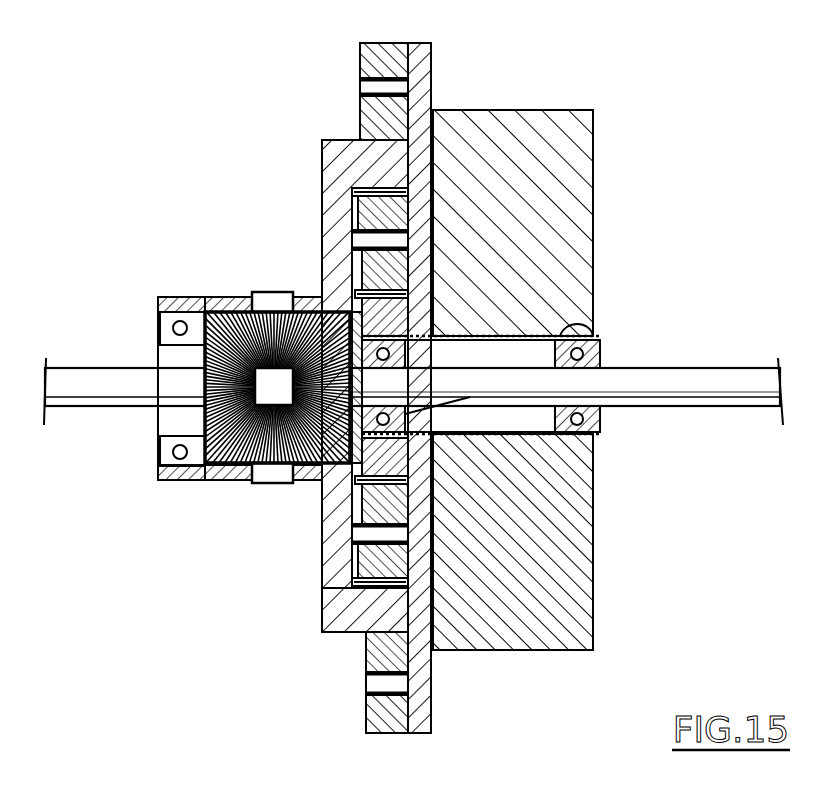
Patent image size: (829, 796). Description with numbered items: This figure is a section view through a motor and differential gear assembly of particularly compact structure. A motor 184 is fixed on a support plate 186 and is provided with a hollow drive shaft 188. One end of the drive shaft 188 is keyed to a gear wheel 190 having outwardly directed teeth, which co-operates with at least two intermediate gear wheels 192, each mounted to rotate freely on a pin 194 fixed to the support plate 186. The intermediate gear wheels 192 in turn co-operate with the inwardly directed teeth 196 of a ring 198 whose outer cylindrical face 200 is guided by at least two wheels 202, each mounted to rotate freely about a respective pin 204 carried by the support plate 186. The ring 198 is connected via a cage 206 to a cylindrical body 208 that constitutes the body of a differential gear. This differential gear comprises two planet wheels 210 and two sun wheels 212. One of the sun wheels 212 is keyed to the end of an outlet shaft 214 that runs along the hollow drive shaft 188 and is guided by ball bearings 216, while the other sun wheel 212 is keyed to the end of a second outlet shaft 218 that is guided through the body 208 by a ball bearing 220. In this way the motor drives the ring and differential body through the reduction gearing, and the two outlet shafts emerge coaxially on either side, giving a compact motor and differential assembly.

The motor 184 is at (578, 128).
The support plate 186 is at (432, 45).
The hollow drive shaft 188 is at (562, 340).
The gear wheel 190 is at (328, 500).
The intermediate gear wheels 192 is at (322, 582).
The pin 194 is at (325, 538).
The inwardly directed teeth 196 is at (400, 562).
The ring 198 is at (340, 636).
The outer cylindrical face 200 is at (360, 660).
The wheels 202 is at (362, 43).
The pin 204 is at (360, 88).
The cage 206 is at (340, 186).
The cylindrical body 208 is at (184, 298).
The planet wheels 210 is at (262, 294).
The sun wheels 212 is at (302, 298).
The outlet shaft 214 is at (762, 364).
The ball bearings 216 is at (530, 412).
The outlet shaft 218 is at (88, 364).
The ball bearing 220 is at (160, 332).